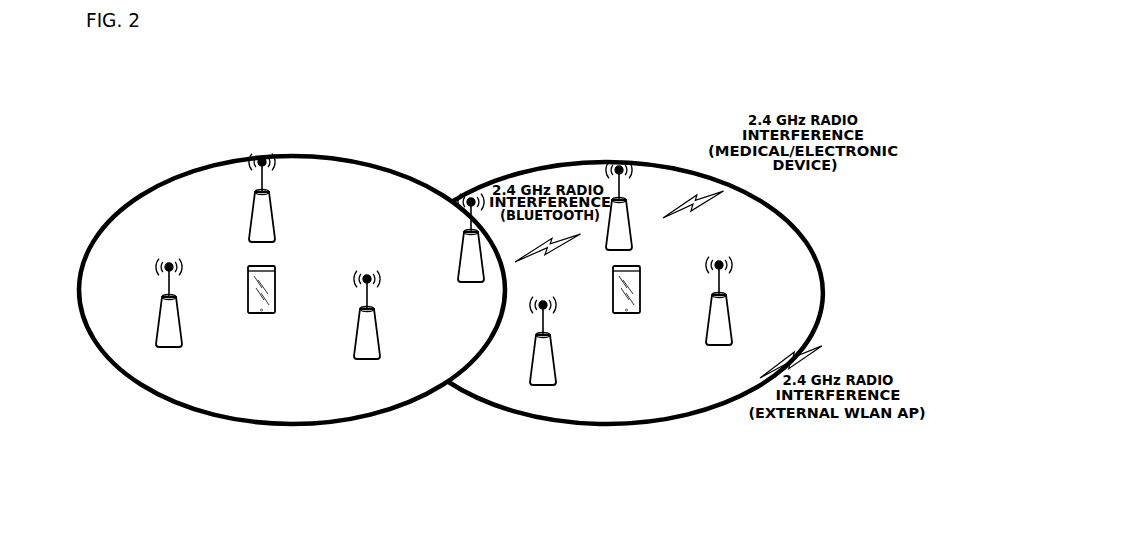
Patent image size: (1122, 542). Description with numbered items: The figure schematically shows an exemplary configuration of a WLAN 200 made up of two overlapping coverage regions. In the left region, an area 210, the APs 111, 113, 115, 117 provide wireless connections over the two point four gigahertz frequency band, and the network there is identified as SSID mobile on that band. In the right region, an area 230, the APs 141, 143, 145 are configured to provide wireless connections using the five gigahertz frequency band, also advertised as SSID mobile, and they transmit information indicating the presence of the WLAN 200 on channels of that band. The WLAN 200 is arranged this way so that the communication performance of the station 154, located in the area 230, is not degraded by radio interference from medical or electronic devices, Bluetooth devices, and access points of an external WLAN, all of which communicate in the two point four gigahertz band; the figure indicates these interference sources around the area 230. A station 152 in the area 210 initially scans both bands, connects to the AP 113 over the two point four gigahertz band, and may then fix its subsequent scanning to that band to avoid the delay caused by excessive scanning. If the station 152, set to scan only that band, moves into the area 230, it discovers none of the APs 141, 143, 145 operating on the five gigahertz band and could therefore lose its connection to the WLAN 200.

The WLAN 200 is at (124, 107).
The AP 111 is at (181, 322).
The AP 113 is at (276, 222).
The AP 115 is at (382, 335).
The AP 117 is at (458, 258).
The AP 141 is at (530, 365).
The AP 143 is at (632, 232).
The AP 145 is at (728, 308).
The station 152 is at (275, 285).
The station 154 is at (613, 283).
The area 210 is at (290, 424).
The area 230 is at (603, 424).